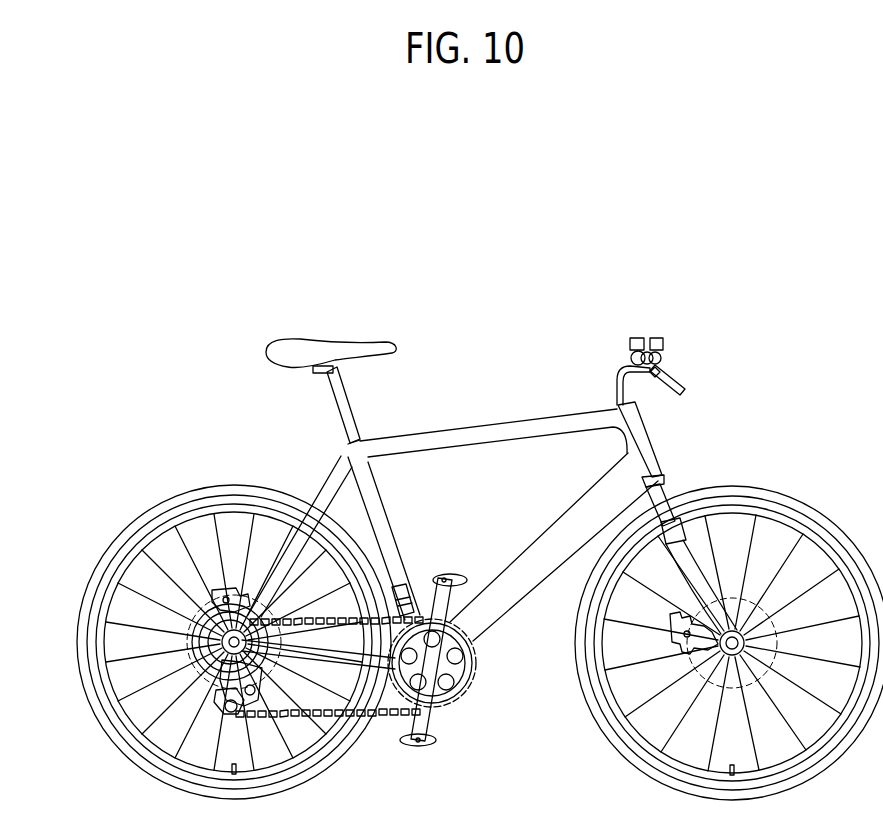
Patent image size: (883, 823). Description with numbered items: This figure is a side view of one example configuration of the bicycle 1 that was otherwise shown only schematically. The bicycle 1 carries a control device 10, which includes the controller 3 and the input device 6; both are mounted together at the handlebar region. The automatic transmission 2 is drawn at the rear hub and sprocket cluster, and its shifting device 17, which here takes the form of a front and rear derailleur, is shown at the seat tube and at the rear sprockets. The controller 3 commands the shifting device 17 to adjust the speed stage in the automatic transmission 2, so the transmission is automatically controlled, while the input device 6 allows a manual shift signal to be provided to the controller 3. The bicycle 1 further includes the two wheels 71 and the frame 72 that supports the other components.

The bicycle 1 is at (321, 172).
The automatic transmission 2 is at (185, 675).
The controller 3 is at (636, 338).
The input device 6 is at (656, 338).
The control device 10 is at (688, 331).
The shifting device 17 is at (406, 587).
The wheels 71 is at (839, 480).
The frame 72 is at (576, 505).